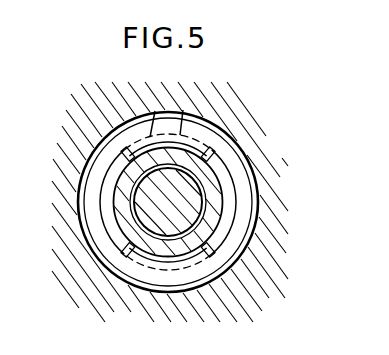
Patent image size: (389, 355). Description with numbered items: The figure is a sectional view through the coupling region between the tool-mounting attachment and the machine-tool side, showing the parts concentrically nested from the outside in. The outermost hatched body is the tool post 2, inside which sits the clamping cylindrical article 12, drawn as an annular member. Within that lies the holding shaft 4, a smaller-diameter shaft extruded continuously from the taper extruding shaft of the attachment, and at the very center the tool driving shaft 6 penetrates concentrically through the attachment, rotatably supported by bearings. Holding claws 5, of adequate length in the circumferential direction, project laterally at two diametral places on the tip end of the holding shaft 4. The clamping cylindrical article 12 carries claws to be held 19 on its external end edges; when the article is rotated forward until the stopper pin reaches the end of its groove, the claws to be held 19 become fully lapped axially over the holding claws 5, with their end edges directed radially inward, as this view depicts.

The tool post 2 is at (288, 153).
The holding shaft 4 is at (207, 227).
The holding claw 5 is at (182, 130).
The tool driving shaft 6 is at (150, 193).
The clamping cylindrical article 12 is at (243, 181).
The claw to be held 19 is at (150, 140).